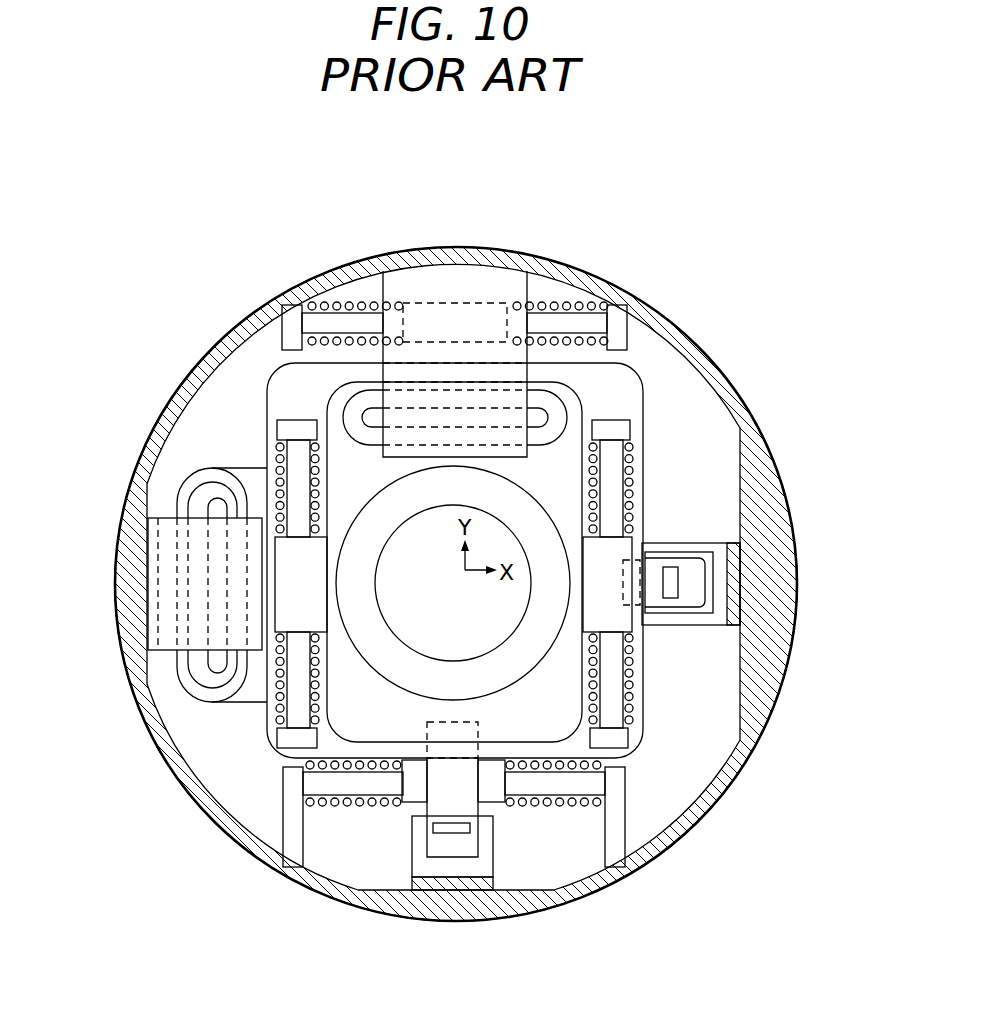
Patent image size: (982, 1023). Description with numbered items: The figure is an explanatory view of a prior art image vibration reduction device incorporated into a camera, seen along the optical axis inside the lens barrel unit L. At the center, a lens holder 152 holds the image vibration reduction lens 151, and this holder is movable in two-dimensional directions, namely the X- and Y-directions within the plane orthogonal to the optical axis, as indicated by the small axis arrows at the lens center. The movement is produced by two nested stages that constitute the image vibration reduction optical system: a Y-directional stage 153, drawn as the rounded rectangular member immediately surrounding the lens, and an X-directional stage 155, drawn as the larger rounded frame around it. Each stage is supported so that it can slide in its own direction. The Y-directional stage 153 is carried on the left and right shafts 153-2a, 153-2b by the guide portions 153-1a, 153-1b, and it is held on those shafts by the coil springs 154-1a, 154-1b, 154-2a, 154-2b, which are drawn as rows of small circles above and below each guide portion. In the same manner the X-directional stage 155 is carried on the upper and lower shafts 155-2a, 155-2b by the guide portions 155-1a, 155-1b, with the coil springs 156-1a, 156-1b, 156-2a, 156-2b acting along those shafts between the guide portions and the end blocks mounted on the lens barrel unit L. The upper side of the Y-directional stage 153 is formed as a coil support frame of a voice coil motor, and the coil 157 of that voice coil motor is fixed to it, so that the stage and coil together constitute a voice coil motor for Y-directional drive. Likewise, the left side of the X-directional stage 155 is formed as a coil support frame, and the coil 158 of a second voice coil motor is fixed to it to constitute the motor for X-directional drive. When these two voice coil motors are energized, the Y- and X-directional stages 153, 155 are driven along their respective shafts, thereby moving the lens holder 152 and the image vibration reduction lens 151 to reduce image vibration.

The image vibration reduction lens 151 is at (403, 625).
The lens holder 152 is at (533, 650).
The Y-directional stage 153 is at (398, 742).
The guide portion 153-1a is at (623, 547).
The guide portion 153-1b is at (283, 548).
The shaft 153-2a is at (615, 708).
The shaft 153-2b is at (288, 448).
The coil spring 154-1a is at (635, 448).
The coil spring 154-1b is at (633, 677).
The coil spring 154-2a is at (280, 481).
The coil spring 154-2b is at (276, 684).
The X-directional stage 155 is at (620, 390).
The guide portion 155-1a is at (492, 790).
The guide portion 155-1b is at (478, 307).
The shaft 155-2a is at (538, 787).
The shaft 155-2b is at (303, 303).
The coil spring 156-1a is at (583, 803).
The coil spring 156-1b is at (330, 805).
The coil spring 156-2a is at (570, 305).
The coil spring 156-2b is at (337, 313).
The coil of voice coil motor 157 is at (358, 396).
The coil of voice coil motor 158 is at (197, 665).
The lens barrel unit L is at (753, 718).